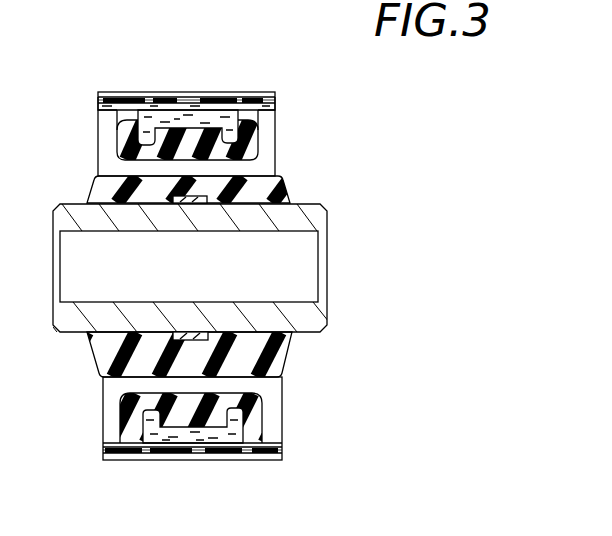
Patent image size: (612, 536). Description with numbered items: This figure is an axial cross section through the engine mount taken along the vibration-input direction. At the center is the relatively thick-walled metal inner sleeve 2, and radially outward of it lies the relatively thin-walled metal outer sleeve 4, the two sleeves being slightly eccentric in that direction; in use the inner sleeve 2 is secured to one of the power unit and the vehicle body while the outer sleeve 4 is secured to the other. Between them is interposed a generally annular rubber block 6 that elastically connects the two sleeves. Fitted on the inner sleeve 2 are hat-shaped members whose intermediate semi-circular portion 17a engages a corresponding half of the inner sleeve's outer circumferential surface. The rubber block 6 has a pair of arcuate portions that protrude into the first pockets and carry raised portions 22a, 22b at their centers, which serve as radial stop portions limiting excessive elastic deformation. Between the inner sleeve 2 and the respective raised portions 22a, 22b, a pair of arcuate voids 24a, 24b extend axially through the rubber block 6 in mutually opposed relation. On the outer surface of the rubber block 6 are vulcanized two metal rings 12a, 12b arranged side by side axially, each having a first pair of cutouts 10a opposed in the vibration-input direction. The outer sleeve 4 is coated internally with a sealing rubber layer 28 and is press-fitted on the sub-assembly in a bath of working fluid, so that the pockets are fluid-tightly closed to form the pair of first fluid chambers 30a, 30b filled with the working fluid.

The inner sleeve 2 is at (318, 216).
The outer sleeve 4 is at (255, 93).
The rubber block 6 is at (285, 182).
The first pair of cutouts 10a is at (163, 102).
The metal ring 12a is at (108, 106).
The metal ring 12b is at (277, 107).
The intermediate semi-circular portion 17a is at (197, 198).
The raised portion 22a is at (185, 137).
The raised portion 22b is at (205, 427).
The arcuate void 24a is at (130, 172).
The arcuate void 24b is at (138, 383).
The sealing rubber layer 28 is at (253, 457).
The first fluid chamber 30a is at (217, 108).
The first fluid chamber 30b is at (167, 443).